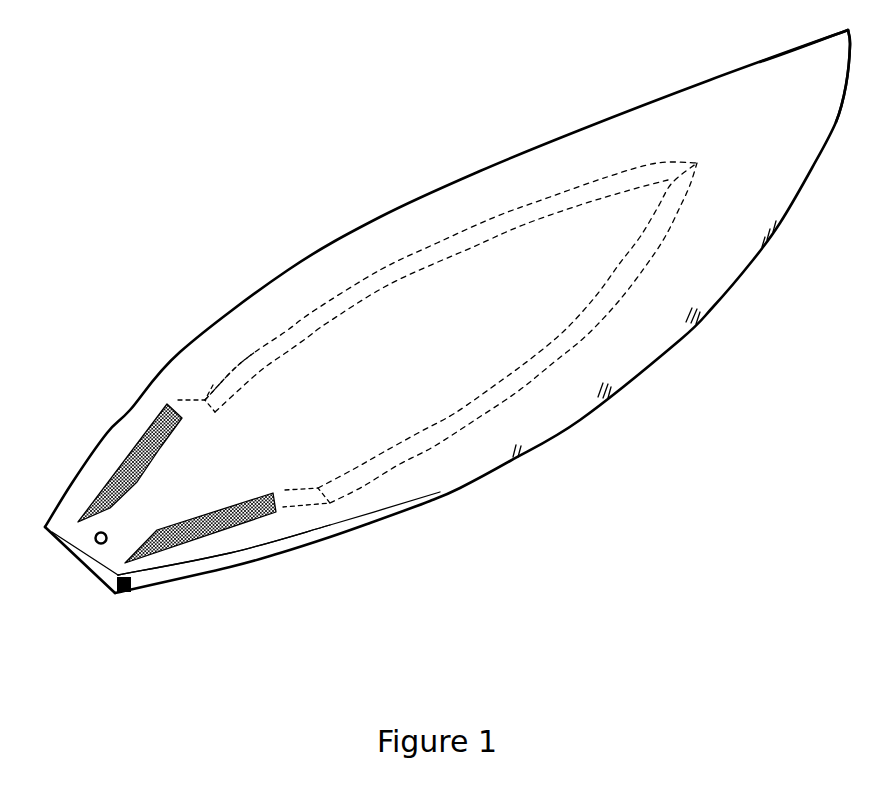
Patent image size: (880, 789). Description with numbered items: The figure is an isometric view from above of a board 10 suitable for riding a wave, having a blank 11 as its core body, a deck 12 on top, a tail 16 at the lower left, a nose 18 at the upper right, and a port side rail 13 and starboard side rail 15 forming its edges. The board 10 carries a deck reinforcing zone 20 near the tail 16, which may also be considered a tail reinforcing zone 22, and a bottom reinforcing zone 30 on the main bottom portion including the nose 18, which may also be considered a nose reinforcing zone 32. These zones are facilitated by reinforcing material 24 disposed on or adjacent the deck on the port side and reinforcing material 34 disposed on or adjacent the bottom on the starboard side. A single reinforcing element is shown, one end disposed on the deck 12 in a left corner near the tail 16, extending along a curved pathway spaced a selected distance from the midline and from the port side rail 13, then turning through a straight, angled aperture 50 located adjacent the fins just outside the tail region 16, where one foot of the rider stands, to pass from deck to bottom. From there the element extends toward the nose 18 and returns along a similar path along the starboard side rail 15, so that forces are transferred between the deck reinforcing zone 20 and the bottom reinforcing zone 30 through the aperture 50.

The board 10 is at (353, 200).
The blank 11 is at (410, 333).
The deck 12 is at (660, 163).
The port side rail 13 is at (533, 148).
The starboard side rail 15 is at (580, 420).
The tail 16 is at (172, 505).
The nose 18 is at (775, 103).
The deck reinforcing zone 20 is at (148, 506).
The tail reinforcing zone 22 is at (137, 510).
The reinforcing material (deck, port) 24 is at (150, 485).
The bottom reinforcing zone 30 is at (588, 265).
The nose reinforcing zone 32 is at (633, 273).
The reinforcing material (bottom, starboard) 34 is at (232, 512).
The aperture 50 is at (207, 400).